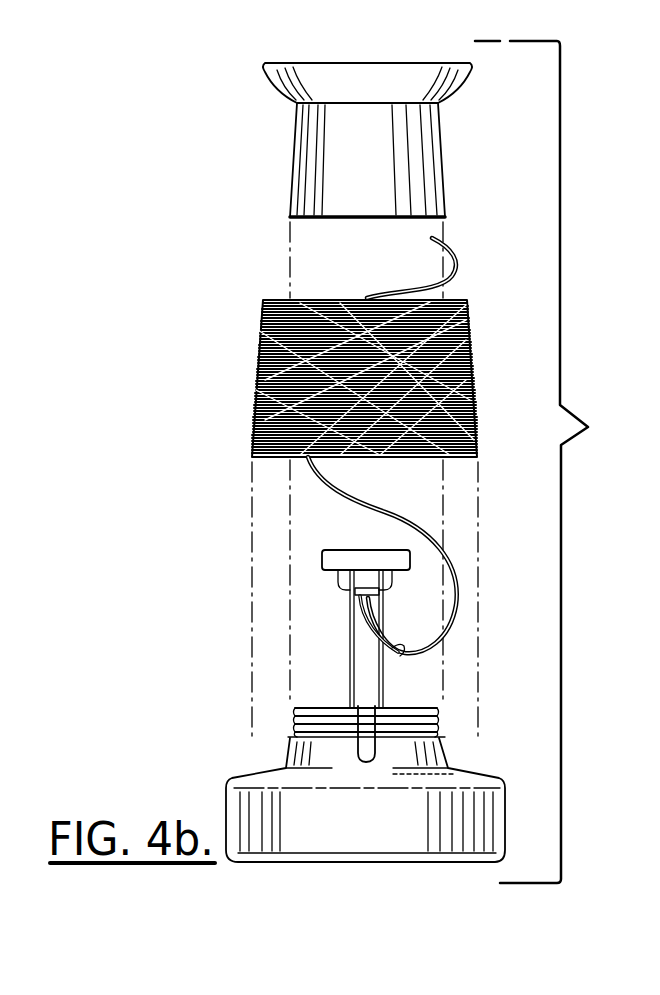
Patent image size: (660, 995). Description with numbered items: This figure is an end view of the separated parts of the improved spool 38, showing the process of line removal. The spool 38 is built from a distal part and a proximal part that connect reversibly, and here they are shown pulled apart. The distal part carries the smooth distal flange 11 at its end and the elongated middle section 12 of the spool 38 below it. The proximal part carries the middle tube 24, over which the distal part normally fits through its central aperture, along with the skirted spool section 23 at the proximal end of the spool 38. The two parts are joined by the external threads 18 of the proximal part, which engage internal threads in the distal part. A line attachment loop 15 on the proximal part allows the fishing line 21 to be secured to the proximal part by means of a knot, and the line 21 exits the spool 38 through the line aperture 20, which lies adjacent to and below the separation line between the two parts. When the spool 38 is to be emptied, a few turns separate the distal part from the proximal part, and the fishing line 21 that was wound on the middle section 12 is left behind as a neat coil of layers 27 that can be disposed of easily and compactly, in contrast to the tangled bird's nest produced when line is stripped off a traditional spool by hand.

The distal flange 11 is at (282, 86).
The middle section 12 is at (292, 176).
The coil of layers 27 is at (236, 364).
The fishing line 21 is at (330, 488).
The middle tube 24 is at (366, 671).
The line attachment loop 15 is at (352, 596).
The external threads 18 is at (292, 718).
The line aperture 20 is at (358, 748).
The skirted spool section 23 is at (483, 815).
The spool 38 is at (551, 462).